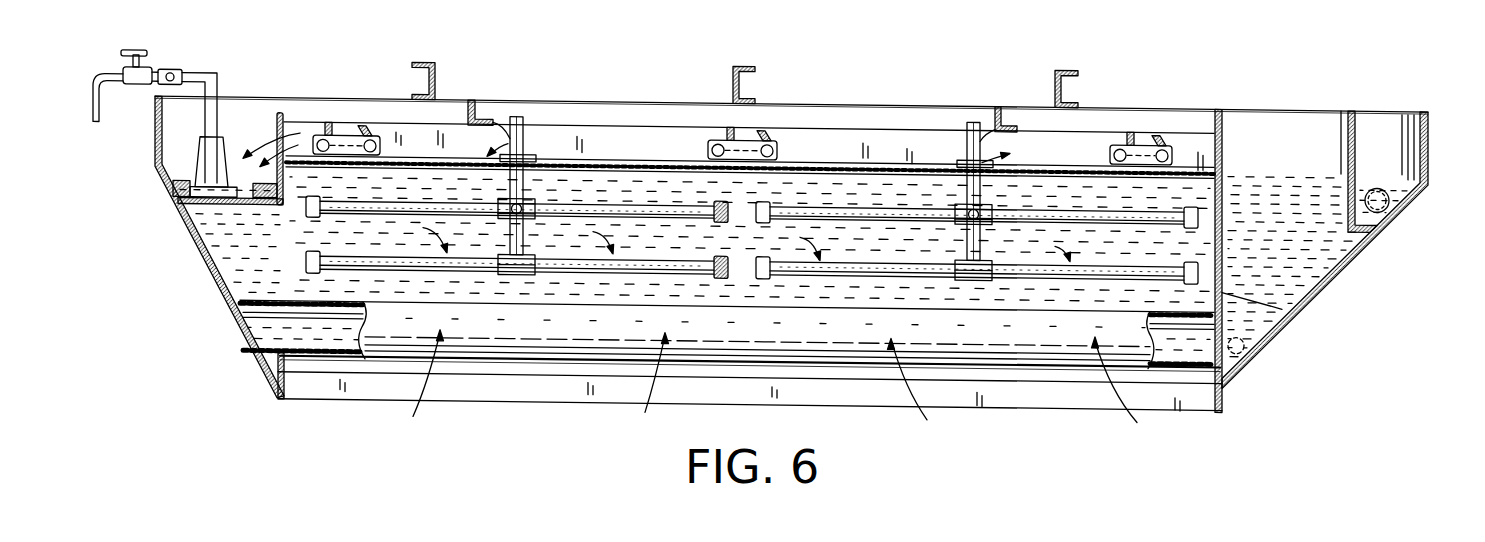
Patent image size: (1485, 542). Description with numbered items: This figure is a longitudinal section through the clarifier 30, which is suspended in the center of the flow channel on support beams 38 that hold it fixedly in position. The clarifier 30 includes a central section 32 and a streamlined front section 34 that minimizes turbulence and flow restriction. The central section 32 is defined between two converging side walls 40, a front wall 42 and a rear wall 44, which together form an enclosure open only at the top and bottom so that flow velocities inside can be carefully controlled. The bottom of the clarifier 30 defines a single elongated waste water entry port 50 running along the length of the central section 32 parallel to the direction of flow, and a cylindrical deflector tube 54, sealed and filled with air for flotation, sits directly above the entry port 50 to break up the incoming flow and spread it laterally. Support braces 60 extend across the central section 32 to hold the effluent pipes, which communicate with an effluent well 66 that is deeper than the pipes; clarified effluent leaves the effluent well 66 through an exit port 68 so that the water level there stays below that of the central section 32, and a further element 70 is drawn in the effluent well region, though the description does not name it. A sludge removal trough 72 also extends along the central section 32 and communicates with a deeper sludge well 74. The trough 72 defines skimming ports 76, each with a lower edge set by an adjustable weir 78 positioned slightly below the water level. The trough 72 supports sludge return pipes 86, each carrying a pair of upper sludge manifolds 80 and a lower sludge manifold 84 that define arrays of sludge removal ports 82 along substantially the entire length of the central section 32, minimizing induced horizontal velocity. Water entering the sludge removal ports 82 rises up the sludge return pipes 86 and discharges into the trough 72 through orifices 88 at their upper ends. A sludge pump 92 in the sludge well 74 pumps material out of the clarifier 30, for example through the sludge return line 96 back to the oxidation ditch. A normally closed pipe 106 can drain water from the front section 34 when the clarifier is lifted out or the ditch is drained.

The clarifier 30 is at (886, 87).
The central section 32 is at (1017, 278).
The front section 34 is at (1362, 252).
The support beams 38 is at (430, 57).
The side walls 40 is at (730, 293).
The front wall 42 is at (1282, 296).
The rear wall 44 is at (183, 213).
The waste water entry port 50 is at (583, 382).
The deflector tube 54 is at (845, 332).
The support braces 60 is at (478, 99).
The effluent well 66 is at (1295, 164).
The exit port 68 is at (1352, 162).
The outlet pipe 70 is at (1374, 174).
The sludge removal trough 72 is at (608, 121).
The sludge well 74 is at (260, 200).
The skimming ports 76 is at (322, 133).
The adjustable weir 78 is at (362, 132).
The upper sludge manifolds 80 is at (352, 211).
The sludge removal ports 82 is at (446, 199).
The lower sludge manifold 84 is at (465, 254).
The sludge return pipes 86 is at (525, 153).
The orifices 88 is at (470, 119).
The sludge pump 92 is at (188, 165).
The sludge return line 96 is at (195, 73).
The pipe 106 is at (1243, 347).